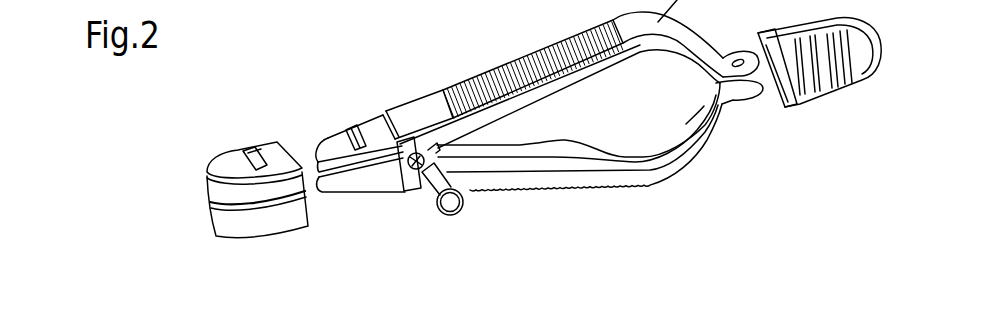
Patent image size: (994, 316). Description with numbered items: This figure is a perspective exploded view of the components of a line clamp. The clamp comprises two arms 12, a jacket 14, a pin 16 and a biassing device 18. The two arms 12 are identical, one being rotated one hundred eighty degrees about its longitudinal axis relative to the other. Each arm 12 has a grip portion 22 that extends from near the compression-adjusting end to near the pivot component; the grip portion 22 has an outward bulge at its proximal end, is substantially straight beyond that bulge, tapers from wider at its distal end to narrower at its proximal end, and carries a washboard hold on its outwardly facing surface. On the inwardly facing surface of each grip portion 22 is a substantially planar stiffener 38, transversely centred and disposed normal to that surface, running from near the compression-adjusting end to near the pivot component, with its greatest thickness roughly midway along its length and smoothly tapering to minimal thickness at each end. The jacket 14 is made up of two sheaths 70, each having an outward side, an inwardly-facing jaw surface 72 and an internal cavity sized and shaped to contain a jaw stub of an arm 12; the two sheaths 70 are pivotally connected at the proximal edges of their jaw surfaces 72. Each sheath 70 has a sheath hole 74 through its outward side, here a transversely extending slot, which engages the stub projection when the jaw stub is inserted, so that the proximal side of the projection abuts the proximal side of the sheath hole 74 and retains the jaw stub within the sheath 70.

The arm 12 is at (697, 163).
The jacket 14 is at (156, 229).
The pin 16 is at (430, 187).
The biassing device 18 is at (832, 82).
The grip portion 22 is at (585, 315).
The stiffener 38 is at (567, 155).
The sheath 70 is at (213, 213).
The jaw surface 72 is at (263, 205).
The sheath hole 74 is at (248, 153).